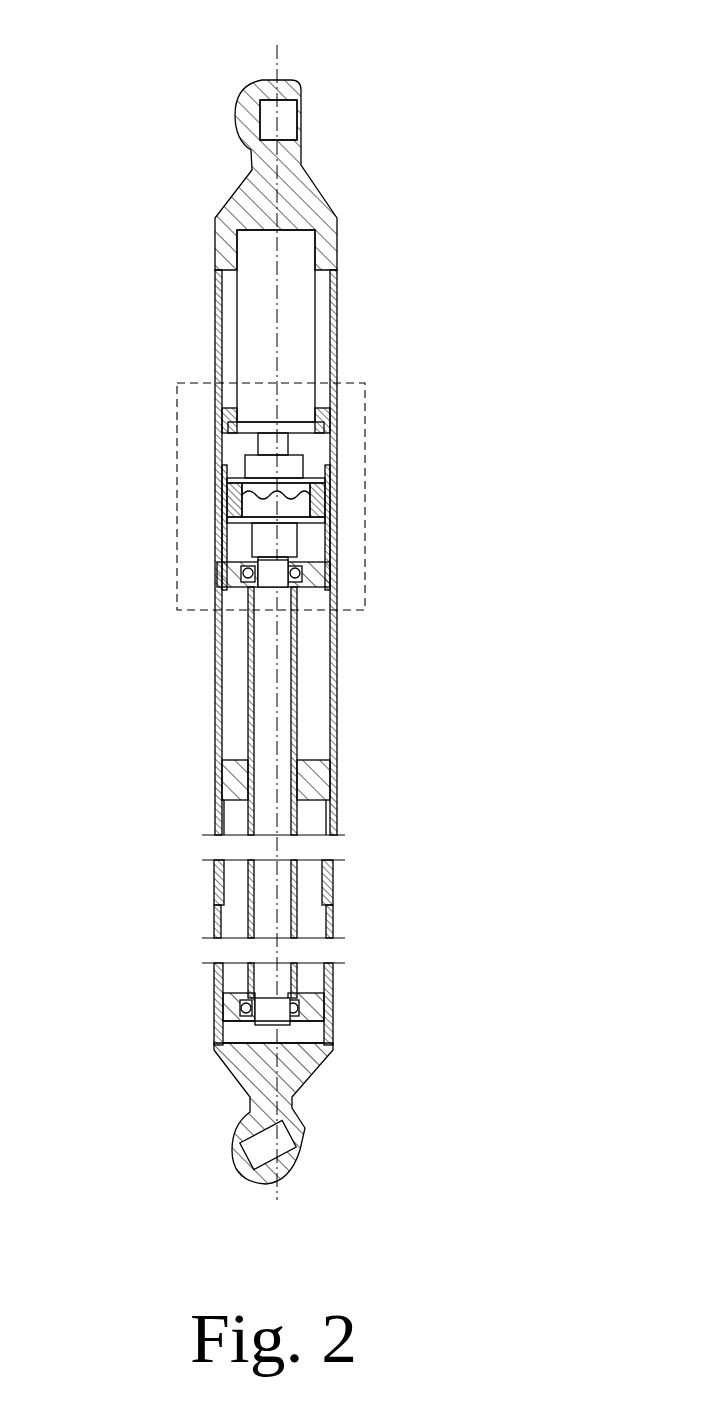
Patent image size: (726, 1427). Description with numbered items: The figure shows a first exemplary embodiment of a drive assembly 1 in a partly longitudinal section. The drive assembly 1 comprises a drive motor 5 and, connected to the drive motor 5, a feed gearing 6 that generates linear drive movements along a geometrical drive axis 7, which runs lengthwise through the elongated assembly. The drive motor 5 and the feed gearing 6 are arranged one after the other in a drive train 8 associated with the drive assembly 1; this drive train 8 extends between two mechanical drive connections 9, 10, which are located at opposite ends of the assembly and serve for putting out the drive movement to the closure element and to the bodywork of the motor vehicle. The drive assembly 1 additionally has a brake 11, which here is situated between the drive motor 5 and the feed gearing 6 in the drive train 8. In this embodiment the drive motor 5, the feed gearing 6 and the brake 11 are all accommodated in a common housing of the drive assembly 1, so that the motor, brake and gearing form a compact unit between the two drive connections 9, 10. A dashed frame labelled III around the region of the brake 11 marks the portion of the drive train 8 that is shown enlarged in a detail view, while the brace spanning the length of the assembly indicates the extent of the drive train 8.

The drive assembly 1 is at (327, 600).
The drive motor 5 is at (298, 332).
The feed gearing 6 is at (283, 737).
The geometrical drive axis 7 is at (318, 135).
The drive train 8 is at (259, 592).
The mechanical drive connection 9 is at (287, 122).
The mechanical drive connection 10 is at (340, 1113).
The brake 11 is at (385, 512).
The detail section III is at (367, 463).